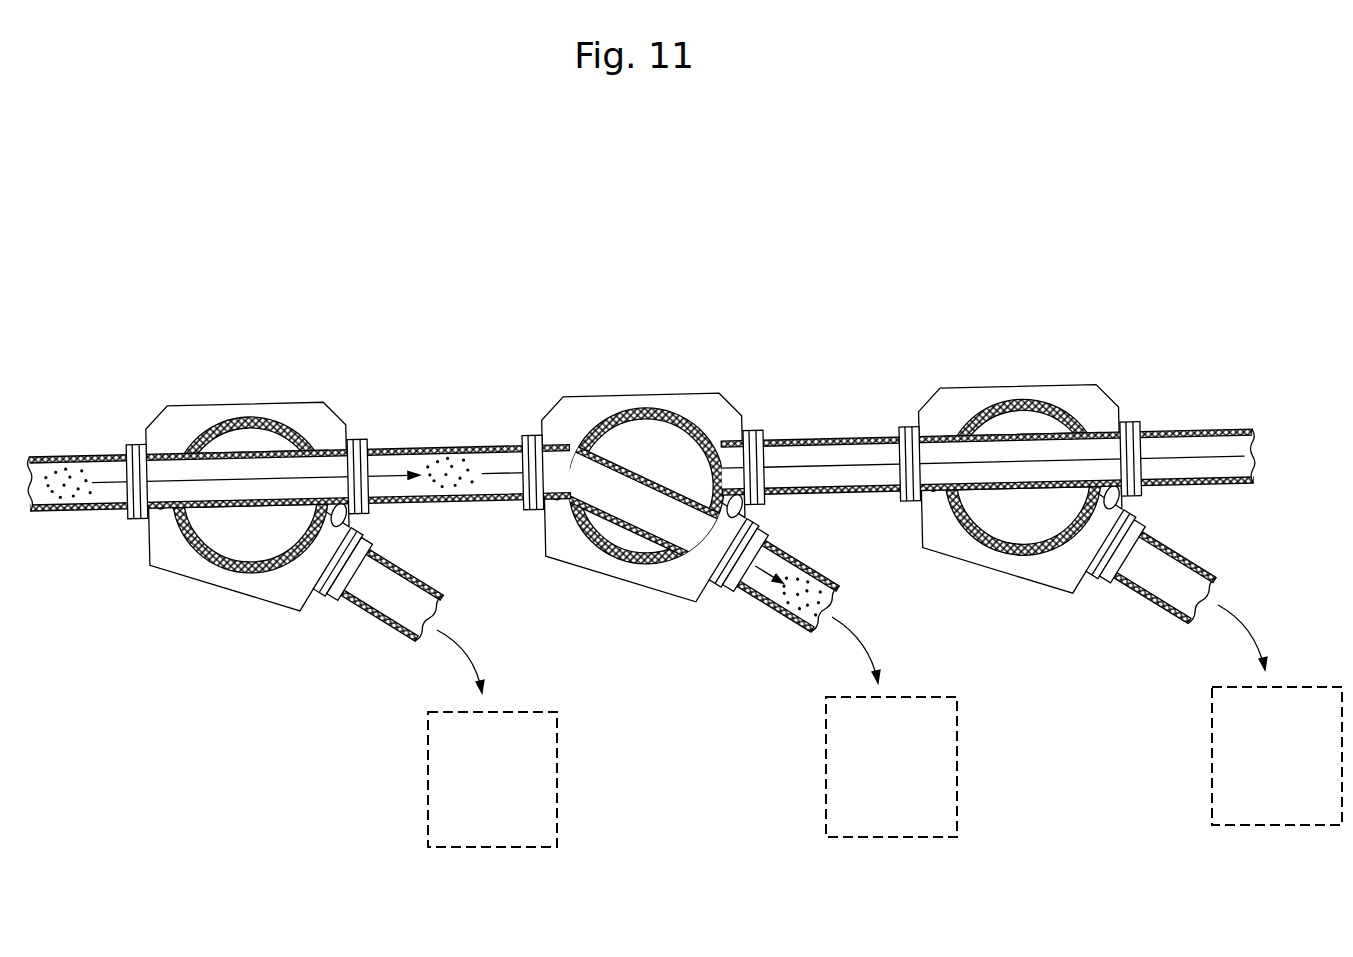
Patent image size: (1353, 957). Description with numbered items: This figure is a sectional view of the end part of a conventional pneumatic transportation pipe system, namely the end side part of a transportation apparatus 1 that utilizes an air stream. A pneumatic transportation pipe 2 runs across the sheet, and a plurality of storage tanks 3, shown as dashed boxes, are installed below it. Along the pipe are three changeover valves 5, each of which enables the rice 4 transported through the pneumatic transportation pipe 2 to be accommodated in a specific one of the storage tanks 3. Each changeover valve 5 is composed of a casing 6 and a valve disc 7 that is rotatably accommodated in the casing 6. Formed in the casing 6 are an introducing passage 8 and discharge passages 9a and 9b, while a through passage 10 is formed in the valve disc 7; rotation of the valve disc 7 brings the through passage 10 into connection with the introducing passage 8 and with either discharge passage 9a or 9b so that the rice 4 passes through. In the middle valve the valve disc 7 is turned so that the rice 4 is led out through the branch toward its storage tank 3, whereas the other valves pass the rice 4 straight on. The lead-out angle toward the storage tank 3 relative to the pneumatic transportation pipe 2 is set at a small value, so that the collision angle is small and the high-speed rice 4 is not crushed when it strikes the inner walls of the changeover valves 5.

The transportation apparatus 1 is at (97, 327).
The pneumatic transportation pipe 2 is at (405, 456).
The storage tank 3 is at (490, 848).
The rice 4 is at (59, 480).
The changeover valve 5 is at (634, 464).
The casing 6 is at (302, 420).
The valve disc 7 is at (206, 548).
The introducing passage 8 is at (155, 504).
The discharge passage 9a is at (330, 468).
The discharge passage 9b is at (270, 609).
The through passage 10 is at (232, 494).